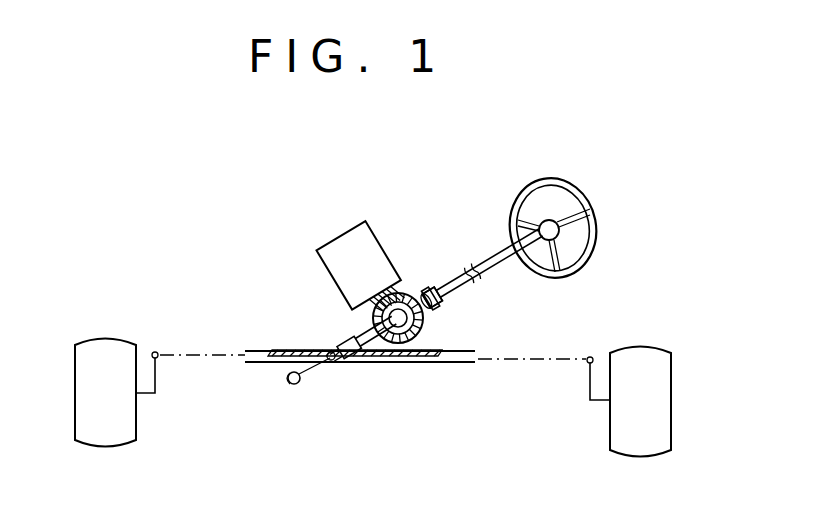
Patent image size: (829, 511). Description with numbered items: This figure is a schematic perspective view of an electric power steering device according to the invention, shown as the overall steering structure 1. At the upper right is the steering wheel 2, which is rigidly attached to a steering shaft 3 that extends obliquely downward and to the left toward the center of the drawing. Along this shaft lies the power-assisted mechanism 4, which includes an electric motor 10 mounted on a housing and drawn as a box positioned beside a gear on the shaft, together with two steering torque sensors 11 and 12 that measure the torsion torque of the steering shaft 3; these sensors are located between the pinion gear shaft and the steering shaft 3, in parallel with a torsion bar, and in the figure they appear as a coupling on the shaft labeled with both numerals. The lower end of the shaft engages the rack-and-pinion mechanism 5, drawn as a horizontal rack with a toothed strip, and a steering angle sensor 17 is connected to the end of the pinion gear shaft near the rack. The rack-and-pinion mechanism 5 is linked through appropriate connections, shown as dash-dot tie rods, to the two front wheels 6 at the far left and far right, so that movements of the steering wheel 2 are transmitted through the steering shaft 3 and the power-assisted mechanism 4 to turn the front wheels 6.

The steering structure 1 is at (425, 201).
The steering wheel 2 is at (564, 225).
The steering shaft 3 is at (492, 263).
The power-assisted mechanism 4 is at (328, 313).
The rack-and-pinion mechanism 5 is at (352, 375).
The front wheels 6 is at (95, 353).
The electric motor 10 is at (348, 257).
The steering torque sensor 11 is at (441, 298).
The steering torque sensor 12 is at (497, 318).
The steering angle sensor 17 is at (289, 386).